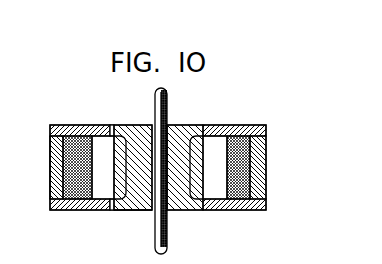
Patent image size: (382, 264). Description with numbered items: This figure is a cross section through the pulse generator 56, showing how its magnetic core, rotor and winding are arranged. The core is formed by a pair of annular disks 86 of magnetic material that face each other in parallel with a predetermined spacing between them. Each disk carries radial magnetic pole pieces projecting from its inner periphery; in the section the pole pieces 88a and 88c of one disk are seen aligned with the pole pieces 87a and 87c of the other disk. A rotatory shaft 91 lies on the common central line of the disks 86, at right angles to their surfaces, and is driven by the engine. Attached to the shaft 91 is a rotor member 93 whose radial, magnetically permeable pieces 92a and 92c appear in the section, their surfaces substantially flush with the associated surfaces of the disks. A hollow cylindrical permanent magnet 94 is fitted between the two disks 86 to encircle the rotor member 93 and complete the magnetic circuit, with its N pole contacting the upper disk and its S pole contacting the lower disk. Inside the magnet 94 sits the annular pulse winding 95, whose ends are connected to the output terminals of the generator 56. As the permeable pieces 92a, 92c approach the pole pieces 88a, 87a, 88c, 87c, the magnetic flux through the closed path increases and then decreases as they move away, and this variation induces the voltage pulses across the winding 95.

The pulse generator 56 is at (92, 93).
The annular disk 86 is at (55, 125).
The radial magnetic pole piece 88a is at (92, 125).
The radial magnetic pole piece 87a is at (92, 210).
The annular pulse winding 95 is at (90, 168).
The magnetically permeable piece 92a is at (128, 120).
The rotor member 93 is at (142, 212).
The rotatory shaft 91 is at (167, 98).
The magnetically permeable piece 92c is at (186, 210).
The radial magnetic pole piece 88c is at (216, 125).
The radial magnetic pole piece 87c is at (218, 210).
The hollow cylindrical permanent magnet 94 is at (266, 157).